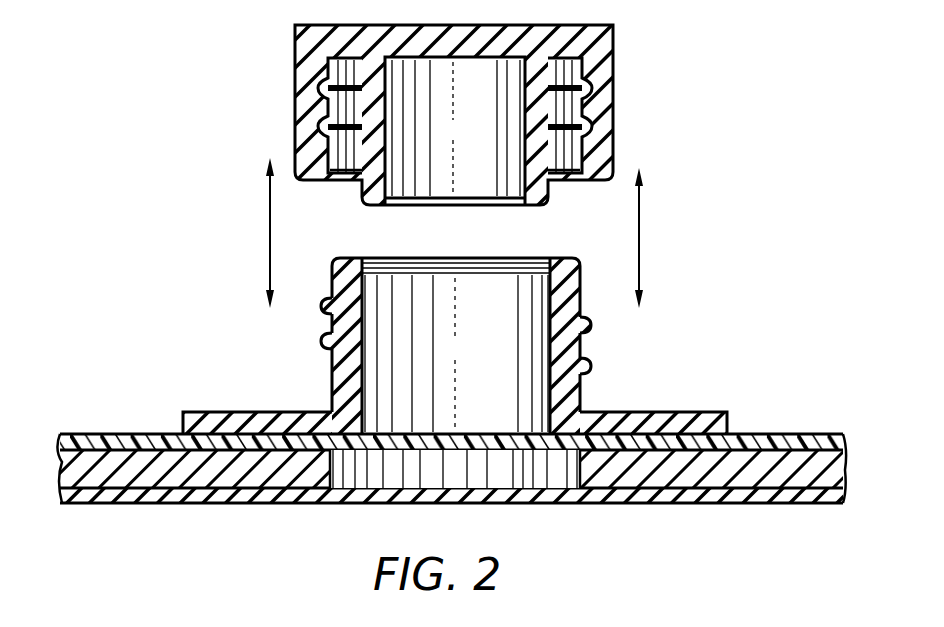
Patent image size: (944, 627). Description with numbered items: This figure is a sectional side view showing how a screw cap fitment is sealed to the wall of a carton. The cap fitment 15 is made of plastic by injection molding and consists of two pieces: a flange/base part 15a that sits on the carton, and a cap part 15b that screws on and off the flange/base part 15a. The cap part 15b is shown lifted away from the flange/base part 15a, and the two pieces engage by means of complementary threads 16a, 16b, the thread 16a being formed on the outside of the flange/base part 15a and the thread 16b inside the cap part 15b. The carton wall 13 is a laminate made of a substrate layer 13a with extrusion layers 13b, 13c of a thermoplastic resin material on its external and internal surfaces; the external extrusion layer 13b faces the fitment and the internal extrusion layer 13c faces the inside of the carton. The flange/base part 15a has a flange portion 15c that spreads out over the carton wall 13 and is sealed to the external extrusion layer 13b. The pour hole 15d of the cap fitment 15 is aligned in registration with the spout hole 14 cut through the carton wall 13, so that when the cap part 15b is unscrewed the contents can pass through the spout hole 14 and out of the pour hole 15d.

The carton wall 13 is at (477, 480).
The substrate layer 13a is at (68, 476).
The external extrusion layer 13b is at (821, 436).
The internal extrusion layer 13c is at (770, 500).
The spout hole 14 is at (350, 488).
The cap fitment 15 is at (275, 105).
The flange/base part 15a is at (460, 328).
The cap part 15b is at (448, 117).
The flange portion 15c is at (207, 412).
The pour hole 15d is at (360, 262).
The thread of flange/base part 16a is at (586, 330).
The thread of cap part 16b is at (598, 130).